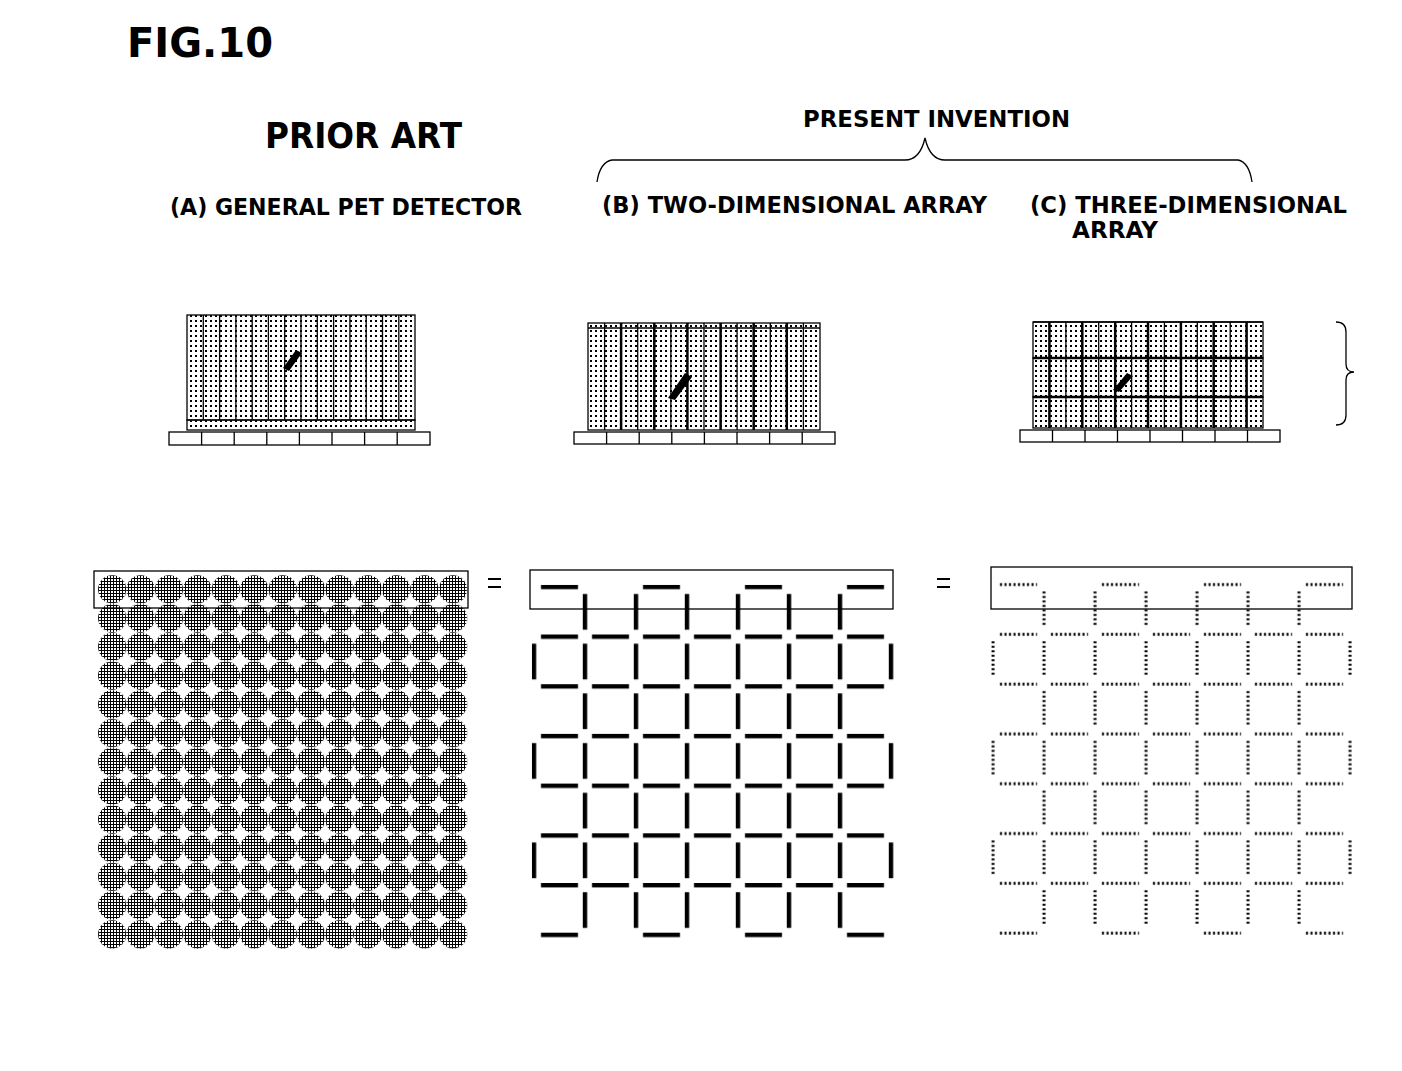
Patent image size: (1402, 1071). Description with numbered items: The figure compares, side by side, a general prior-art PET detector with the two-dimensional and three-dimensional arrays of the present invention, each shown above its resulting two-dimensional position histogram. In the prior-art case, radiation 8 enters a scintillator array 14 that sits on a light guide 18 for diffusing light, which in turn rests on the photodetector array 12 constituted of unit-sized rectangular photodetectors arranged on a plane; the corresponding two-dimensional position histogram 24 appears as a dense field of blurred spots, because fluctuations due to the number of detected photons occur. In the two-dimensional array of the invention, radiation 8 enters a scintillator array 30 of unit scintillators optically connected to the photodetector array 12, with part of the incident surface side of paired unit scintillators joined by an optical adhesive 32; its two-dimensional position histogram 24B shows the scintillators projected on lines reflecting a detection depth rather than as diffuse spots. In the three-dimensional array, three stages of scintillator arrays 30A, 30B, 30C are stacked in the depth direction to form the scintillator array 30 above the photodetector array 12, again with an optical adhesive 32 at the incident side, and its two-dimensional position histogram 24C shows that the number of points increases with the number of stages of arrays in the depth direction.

The radiation 8 is at (774, 351).
The photodetector array 12 is at (441, 437).
The scintillator array 14 is at (428, 378).
The light guide 18 is at (417, 425).
The two-dimensional position histogram 24 is at (262, 552).
The two-dimensional position histogram 24B is at (700, 543).
The two-dimensional position histogram 24C is at (1140, 551).
The scintillator array 30 is at (983, 376).
The scintillator array 30A is at (1263, 343).
The scintillator array 30B is at (1263, 373).
The scintillator array 30C is at (1263, 405).
The optical adhesive 32 is at (806, 330).